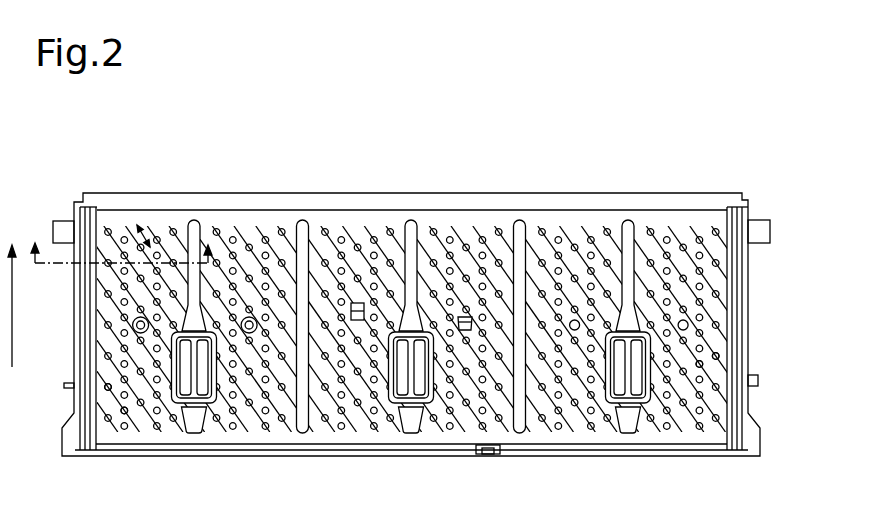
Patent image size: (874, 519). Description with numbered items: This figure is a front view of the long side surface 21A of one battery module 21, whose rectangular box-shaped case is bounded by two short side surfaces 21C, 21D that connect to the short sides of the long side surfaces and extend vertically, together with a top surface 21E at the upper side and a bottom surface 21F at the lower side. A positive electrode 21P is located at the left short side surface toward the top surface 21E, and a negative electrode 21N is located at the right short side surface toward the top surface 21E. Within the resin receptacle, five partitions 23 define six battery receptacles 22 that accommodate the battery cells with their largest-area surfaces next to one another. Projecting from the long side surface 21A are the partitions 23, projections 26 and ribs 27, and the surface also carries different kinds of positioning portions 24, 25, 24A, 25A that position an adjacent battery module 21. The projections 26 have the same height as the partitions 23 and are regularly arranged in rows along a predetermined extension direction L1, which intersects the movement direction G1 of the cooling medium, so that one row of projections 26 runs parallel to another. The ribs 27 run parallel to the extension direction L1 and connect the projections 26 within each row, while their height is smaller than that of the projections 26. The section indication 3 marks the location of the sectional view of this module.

The battery module 21 is at (705, 193).
The long side surface 21A is at (713, 248).
The short side surface 21C is at (750, 296).
The short side surface 21D is at (74, 300).
The top surface 21E is at (440, 195).
The bottom surface 21F is at (402, 455).
The positive electrode 21P is at (60, 221).
The negative electrode 21N is at (760, 220).
The battery receptacle 22 is at (160, 216).
The partition 23 is at (195, 222).
The positioning portion 24 is at (132, 325).
The positioning portion 24A is at (356, 303).
The positioning portion 25 is at (688, 325).
The positioning portion 25A is at (466, 317).
The projection 26 is at (121, 408).
The rib 27 is at (165, 405).
The extension direction L1 is at (139, 226).
The section line 3 is at (121, 239).
The movement direction G1 is at (12, 367).